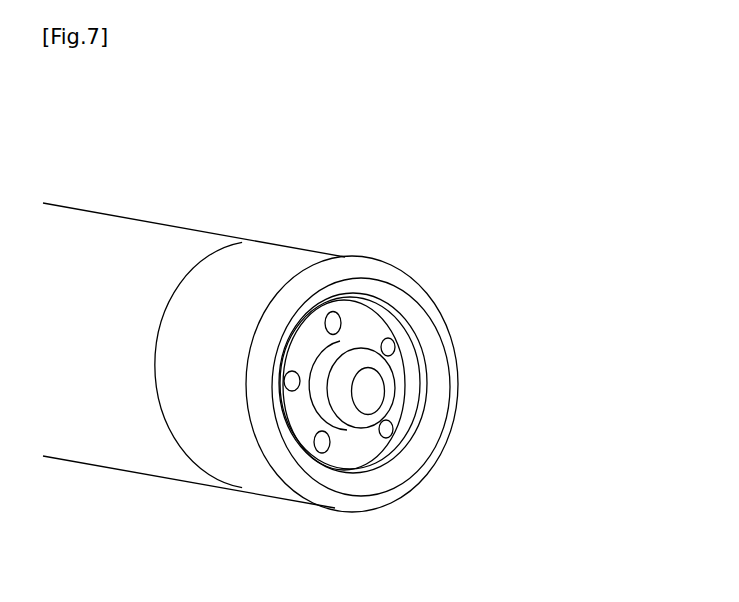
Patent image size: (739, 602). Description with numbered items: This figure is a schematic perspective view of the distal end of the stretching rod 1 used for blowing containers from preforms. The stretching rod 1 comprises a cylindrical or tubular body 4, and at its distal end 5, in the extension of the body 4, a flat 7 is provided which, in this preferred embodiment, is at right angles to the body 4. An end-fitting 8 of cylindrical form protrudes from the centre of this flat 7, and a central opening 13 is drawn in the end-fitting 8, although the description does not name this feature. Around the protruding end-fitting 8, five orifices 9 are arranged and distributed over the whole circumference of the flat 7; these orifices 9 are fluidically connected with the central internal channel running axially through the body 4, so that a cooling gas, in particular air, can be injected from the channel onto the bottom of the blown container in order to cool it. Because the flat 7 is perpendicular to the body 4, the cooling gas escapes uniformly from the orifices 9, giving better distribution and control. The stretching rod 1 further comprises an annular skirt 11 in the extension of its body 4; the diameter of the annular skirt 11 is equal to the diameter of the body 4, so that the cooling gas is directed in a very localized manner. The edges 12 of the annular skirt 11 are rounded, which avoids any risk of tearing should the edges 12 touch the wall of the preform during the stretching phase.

The stretching rod 1 is at (176, 206).
The body 4 is at (127, 229).
The distal end 5 is at (265, 478).
The flat 7 is at (404, 373).
The end-fitting 8 is at (354, 347).
The orifices 9 is at (402, 350).
The annular skirt 11 is at (432, 472).
The edges 12 is at (394, 273).
The bore 13 is at (386, 390).